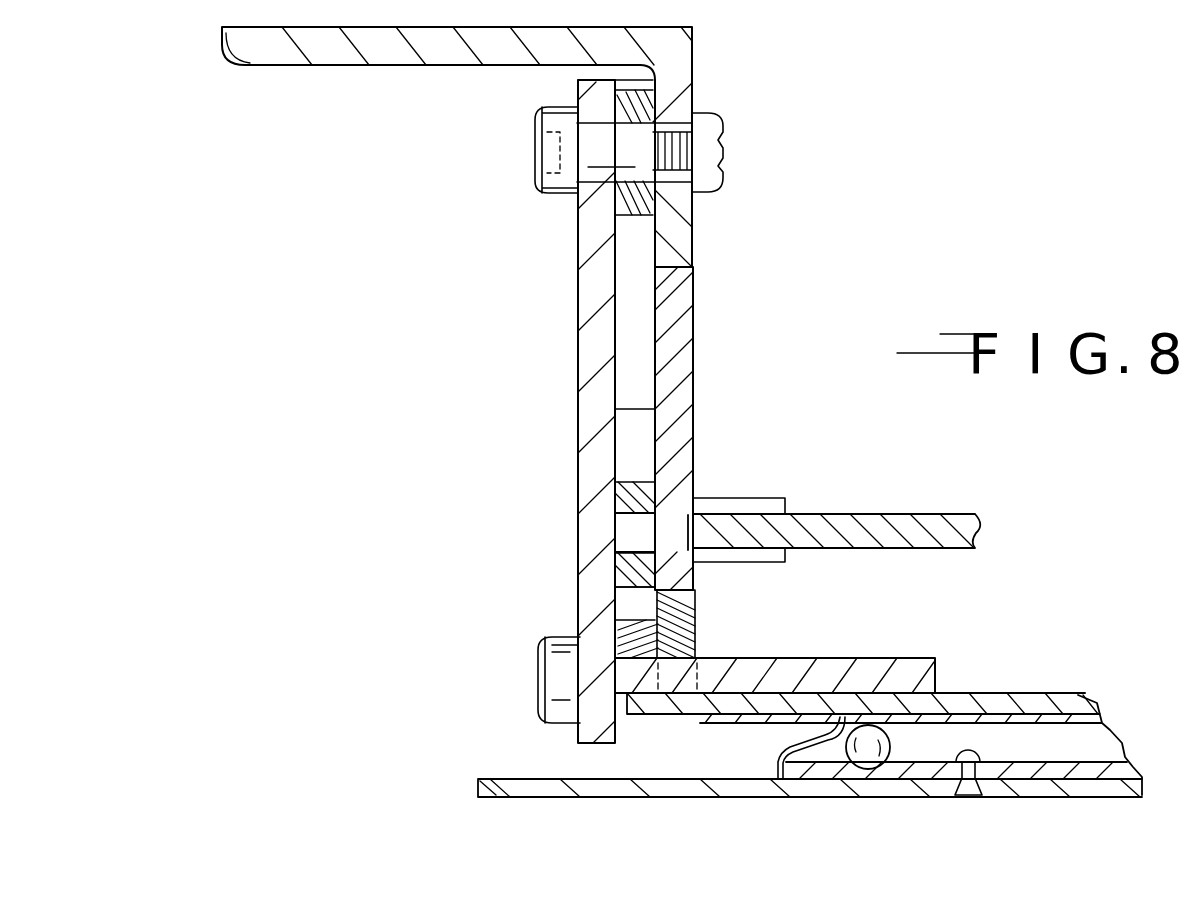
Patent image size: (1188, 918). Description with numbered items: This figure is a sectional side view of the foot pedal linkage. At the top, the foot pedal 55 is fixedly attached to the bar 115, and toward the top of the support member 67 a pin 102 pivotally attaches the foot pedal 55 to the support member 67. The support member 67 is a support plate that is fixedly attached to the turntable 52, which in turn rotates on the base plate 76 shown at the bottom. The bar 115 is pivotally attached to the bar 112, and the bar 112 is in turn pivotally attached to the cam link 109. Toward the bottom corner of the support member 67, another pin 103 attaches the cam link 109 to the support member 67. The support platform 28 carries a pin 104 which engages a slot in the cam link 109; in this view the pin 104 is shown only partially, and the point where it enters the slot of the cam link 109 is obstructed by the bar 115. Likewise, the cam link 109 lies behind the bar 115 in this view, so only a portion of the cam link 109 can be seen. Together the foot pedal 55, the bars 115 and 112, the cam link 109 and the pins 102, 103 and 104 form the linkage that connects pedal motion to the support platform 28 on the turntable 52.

The foot pedal 55 is at (333, 57).
The pin 102 is at (548, 123).
The support member 67 is at (590, 288).
The bar 115 is at (677, 305).
The bar 112 is at (633, 496).
The pin 104 is at (743, 500).
The support platform 28 is at (888, 513).
The pin 103 is at (552, 668).
The cam link 109 is at (683, 615).
The turntable 52 is at (1034, 750).
The base plate 76 is at (613, 800).